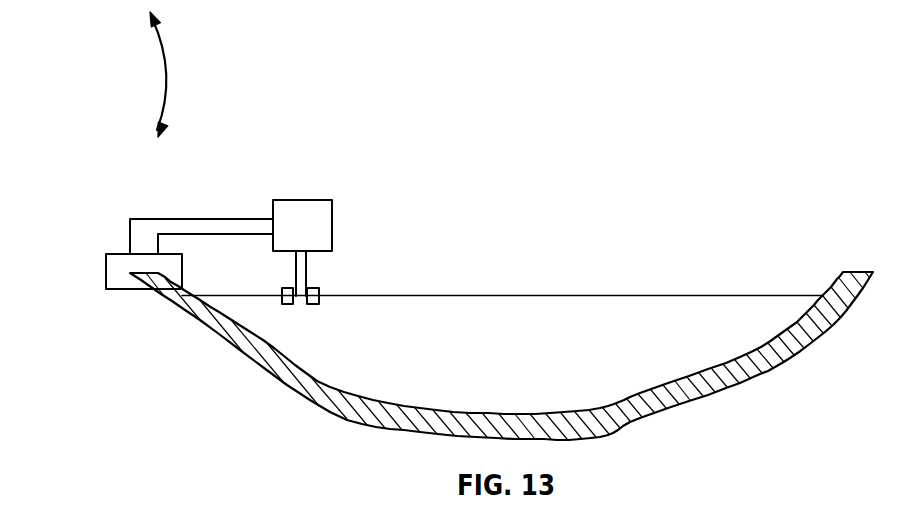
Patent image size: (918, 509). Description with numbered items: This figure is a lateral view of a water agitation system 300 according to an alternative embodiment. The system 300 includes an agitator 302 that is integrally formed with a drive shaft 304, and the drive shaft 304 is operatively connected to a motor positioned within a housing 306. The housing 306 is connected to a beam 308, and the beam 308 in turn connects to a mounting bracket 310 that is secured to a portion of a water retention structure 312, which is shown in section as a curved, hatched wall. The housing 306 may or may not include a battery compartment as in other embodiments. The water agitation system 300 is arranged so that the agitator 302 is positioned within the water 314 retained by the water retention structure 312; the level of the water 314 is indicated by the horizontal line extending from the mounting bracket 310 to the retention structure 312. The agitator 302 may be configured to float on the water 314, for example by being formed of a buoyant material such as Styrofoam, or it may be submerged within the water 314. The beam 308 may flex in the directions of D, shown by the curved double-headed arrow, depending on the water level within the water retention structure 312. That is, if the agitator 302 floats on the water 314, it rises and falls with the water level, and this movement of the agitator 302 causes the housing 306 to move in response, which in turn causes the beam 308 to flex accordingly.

The water agitation system 300 is at (310, 195).
The agitator 302 is at (319, 302).
The drive shaft 304 is at (306, 275).
The housing 306 is at (332, 225).
The beam 308 is at (203, 218).
The mounting bracket 310 is at (106, 272).
The water retention structure 312 is at (165, 310).
The water 314 is at (537, 293).
The directions of beam flexing D is at (170, 77).